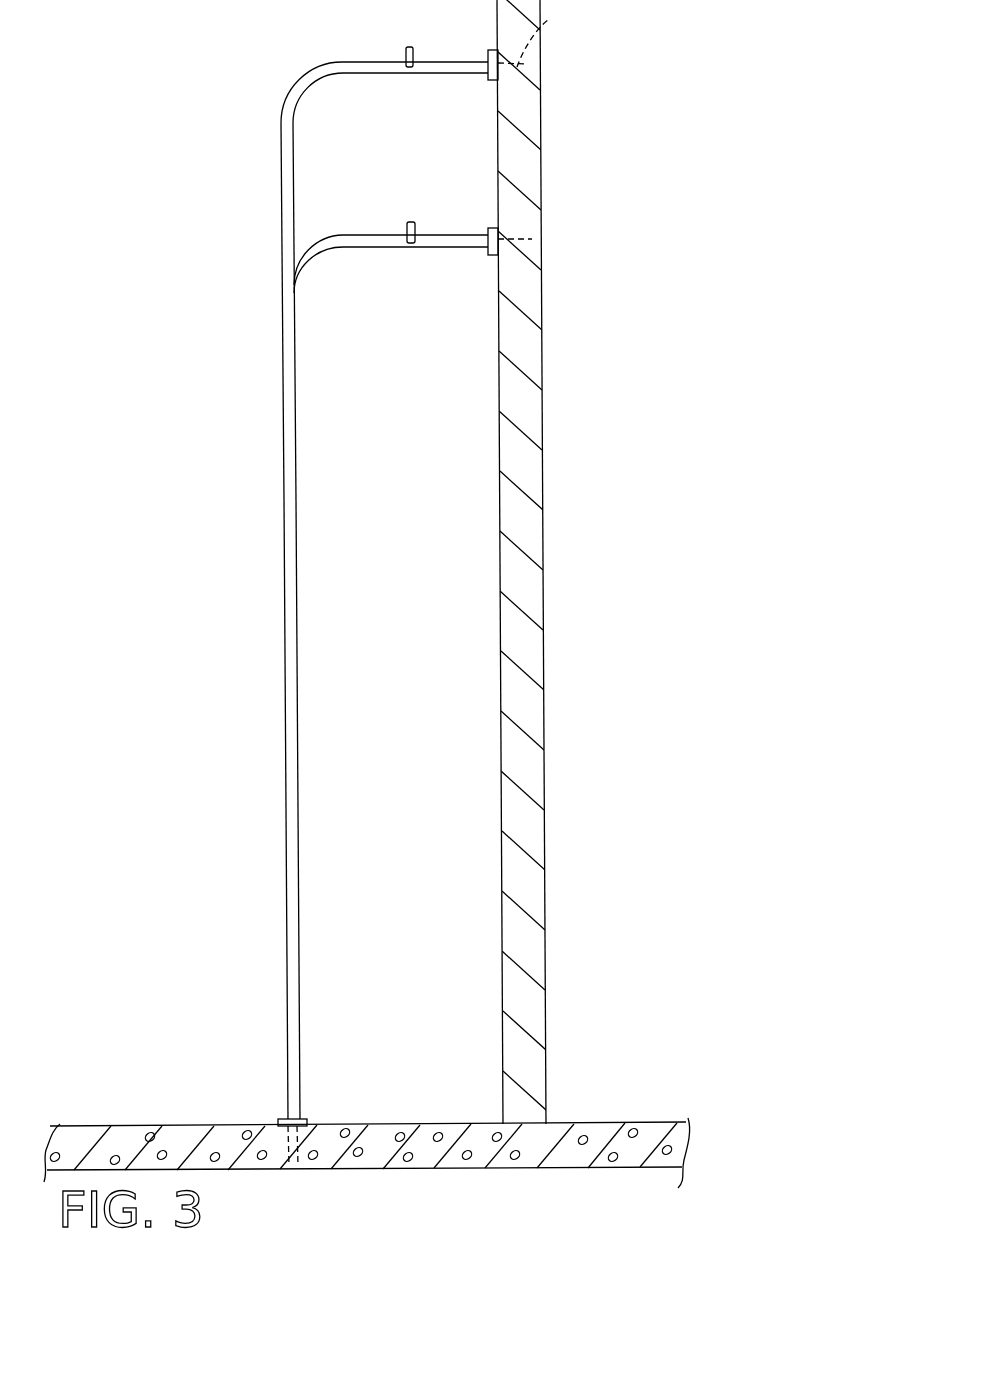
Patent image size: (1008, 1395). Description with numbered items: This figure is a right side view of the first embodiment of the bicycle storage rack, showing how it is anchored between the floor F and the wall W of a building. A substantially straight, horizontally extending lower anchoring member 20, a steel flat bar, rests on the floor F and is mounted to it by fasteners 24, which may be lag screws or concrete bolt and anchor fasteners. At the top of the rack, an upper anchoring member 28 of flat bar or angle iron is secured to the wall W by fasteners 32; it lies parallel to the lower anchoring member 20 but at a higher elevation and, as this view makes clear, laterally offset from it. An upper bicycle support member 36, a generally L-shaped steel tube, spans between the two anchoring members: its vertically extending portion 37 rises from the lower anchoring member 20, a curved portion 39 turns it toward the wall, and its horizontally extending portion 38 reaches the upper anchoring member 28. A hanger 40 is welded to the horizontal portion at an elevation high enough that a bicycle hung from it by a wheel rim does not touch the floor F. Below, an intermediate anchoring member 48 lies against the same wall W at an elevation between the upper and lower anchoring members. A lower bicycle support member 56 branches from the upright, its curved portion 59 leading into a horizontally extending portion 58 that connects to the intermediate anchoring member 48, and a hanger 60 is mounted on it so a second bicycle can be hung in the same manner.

The lower anchoring member 20 is at (315, 1110).
The fasteners 24 is at (327, 1157).
The upper anchoring member 28 is at (480, 43).
The fasteners 32 is at (548, 20).
The upper bicycle support member 36 is at (268, 190).
The vertically extending portion 37 is at (284, 497).
The horizontally extending portion 38 is at (367, 61).
The curved portion 39 is at (293, 92).
The hanger 40 is at (407, 47).
The intermediate anchoring member 48 is at (480, 268).
The lower bicycle support member 56 is at (364, 216).
The horizontally extending portion 58 is at (393, 250).
The curved portion 59 is at (320, 258).
The hanger 60 is at (413, 222).
The wall W is at (541, 150).
The floor F is at (157, 1126).